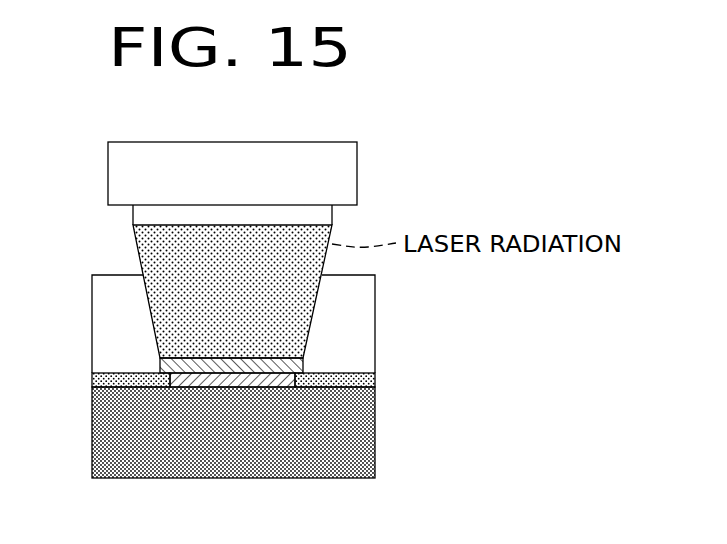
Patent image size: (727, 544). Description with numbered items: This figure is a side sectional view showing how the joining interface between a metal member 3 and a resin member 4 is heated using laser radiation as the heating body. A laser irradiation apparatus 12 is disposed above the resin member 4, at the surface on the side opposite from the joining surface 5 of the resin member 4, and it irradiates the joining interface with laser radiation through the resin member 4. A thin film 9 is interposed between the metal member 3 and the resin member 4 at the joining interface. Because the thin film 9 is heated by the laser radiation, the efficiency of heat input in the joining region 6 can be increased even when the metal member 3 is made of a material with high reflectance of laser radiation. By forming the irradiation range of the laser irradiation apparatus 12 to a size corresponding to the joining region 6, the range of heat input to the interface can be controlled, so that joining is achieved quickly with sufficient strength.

The laser irradiation apparatus 12 is at (357, 177).
The resin member 4 is at (375, 323).
The joining surface 5 is at (180, 352).
The joining region 6 is at (170, 377).
The thin film 9 is at (375, 377).
The metal member 3 is at (375, 428).